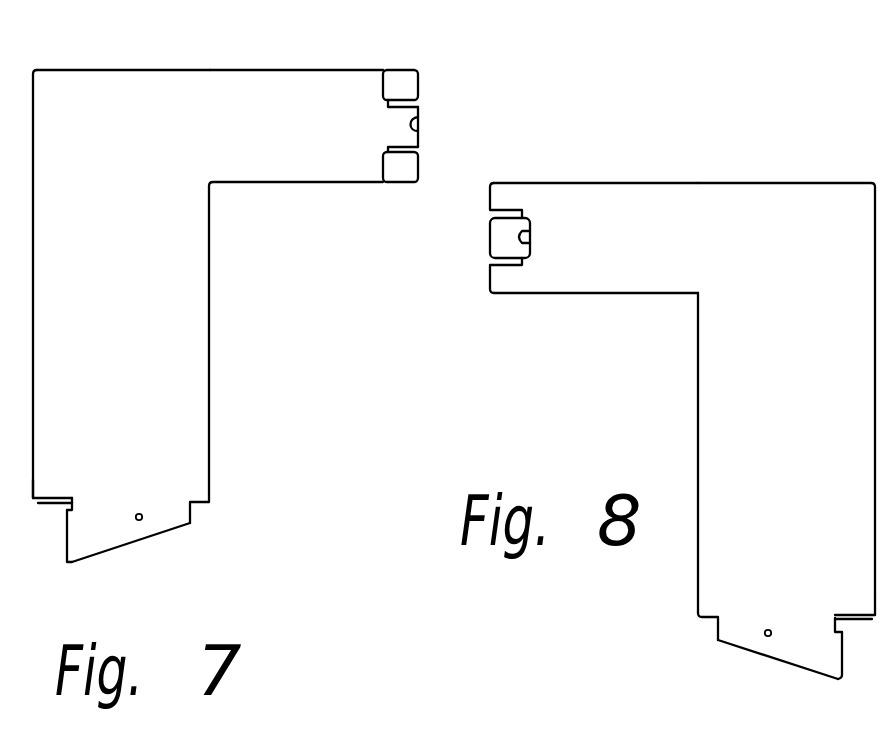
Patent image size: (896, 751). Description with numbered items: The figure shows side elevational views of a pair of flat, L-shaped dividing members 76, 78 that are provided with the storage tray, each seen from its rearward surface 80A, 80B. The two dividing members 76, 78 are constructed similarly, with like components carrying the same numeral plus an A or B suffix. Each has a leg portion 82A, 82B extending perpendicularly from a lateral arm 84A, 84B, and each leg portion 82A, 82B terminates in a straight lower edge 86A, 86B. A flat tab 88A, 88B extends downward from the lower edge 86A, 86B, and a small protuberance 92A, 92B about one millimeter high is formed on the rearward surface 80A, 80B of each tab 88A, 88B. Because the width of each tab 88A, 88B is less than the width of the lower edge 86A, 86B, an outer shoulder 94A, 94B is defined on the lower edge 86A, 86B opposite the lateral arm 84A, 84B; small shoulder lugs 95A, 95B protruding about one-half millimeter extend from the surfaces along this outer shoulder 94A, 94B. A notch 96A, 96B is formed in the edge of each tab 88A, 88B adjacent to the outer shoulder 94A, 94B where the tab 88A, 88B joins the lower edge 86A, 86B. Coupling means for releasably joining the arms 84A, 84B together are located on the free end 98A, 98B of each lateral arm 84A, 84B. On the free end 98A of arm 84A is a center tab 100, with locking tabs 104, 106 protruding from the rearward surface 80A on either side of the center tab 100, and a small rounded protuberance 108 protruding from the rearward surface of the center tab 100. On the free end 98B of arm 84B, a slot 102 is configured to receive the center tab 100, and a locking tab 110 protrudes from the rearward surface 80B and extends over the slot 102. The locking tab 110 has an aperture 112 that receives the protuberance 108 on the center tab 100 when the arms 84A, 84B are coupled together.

In FIG. 7, the dividing member 76 is at (50, 84).
In FIG. 8, the dividing member 78 is at (773, 313).
In FIG. 7, the rearward surface 80A is at (143, 90).
In FIG. 8, the rearward surface 80B is at (806, 210).
In FIG. 7, the leg portion 82A is at (182, 327).
In FIG. 8, the leg portion 82B is at (777, 446).
In FIG. 7, the lateral arm 84A is at (277, 93).
In FIG. 8, the lateral arm 84B is at (665, 205).
In FIG. 7, the lower edge 86A is at (200, 505).
In FIG. 8, the lower edge 86B is at (707, 618).
In FIG. 7, the tab 88A is at (122, 537).
In FIG. 8, the tab 88B is at (802, 645).
In FIG. 7, the protuberance 92A is at (143, 513).
In FIG. 8, the protuberance 92B is at (765, 630).
In FIG. 7, the outer shoulder 94A is at (43, 503).
In FIG. 8, the outer shoulder 94B is at (862, 620).
In FIG. 7, the shoulder lug 95A is at (58, 498).
In FIG. 8, the shoulder lug 95B is at (858, 615).
In FIG. 7, the notch 96A is at (62, 508).
In FIG. 8, the notch 96B is at (845, 626).
In FIG. 7, the free end 98A is at (394, 86).
In FIG. 8, the free end 98B is at (490, 197).
In FIG. 7, the center tab 100 is at (418, 110).
In FIG. 8, the slot 102 is at (495, 260).
In FIG. 7, the locking tab 104 is at (413, 83).
In FIG. 7, the locking tab 106 is at (398, 170).
In FIG. 7, the protuberance 108 is at (418, 134).
In FIG. 8, the locking tab 110 is at (503, 245).
In FIG. 8, the aperture 112 is at (521, 237).